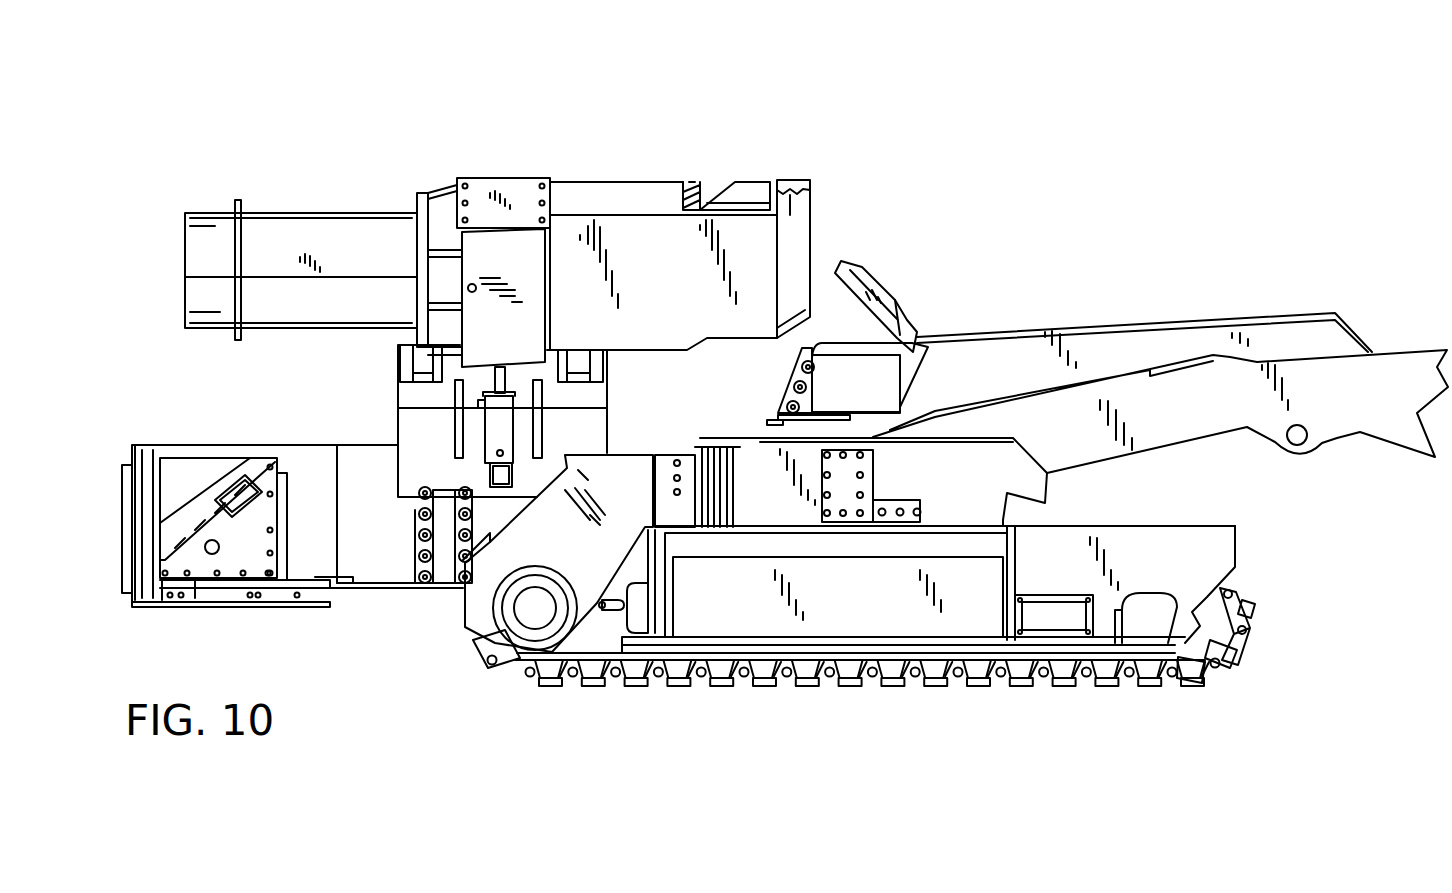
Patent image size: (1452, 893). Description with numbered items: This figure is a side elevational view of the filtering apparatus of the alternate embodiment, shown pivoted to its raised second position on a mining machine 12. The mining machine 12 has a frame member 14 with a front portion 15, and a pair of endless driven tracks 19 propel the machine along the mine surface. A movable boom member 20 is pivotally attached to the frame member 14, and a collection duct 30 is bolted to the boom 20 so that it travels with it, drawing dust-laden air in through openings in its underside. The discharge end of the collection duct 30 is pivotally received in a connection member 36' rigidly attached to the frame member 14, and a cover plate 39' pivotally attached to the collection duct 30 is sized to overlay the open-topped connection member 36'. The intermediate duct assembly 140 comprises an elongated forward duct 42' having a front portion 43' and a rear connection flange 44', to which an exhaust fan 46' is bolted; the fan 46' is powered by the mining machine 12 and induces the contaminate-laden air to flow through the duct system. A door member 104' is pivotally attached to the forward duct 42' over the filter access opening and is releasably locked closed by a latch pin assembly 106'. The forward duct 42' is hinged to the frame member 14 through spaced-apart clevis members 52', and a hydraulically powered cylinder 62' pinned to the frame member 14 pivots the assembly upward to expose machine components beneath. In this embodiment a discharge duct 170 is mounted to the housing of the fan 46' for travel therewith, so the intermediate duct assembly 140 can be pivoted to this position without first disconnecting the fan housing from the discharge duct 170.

The intermediate duct assembly 140 is at (878, 137).
The discharge duct 170 is at (210, 218).
The exhaust fan 46' is at (301, 270).
The rear connection flange 44' is at (448, 243).
The elongated forward duct 42' is at (617, 272).
The latch pin assembly 106' is at (643, 176).
The door member 104' is at (774, 166).
The front portion 43' is at (842, 259).
The cover plate 39' is at (915, 302).
The connection member 36' is at (847, 384).
The collection duct 30 is at (1035, 380).
The movable boom member 20 is at (1340, 397).
The clevis members 52' is at (480, 421).
The hydraulically powered cylinder 62' is at (461, 427).
The frame member 14 is at (975, 480).
The front portion 15 is at (1262, 540).
The mining machine 12 is at (1280, 606).
The endless driven tracks 19 is at (912, 694).